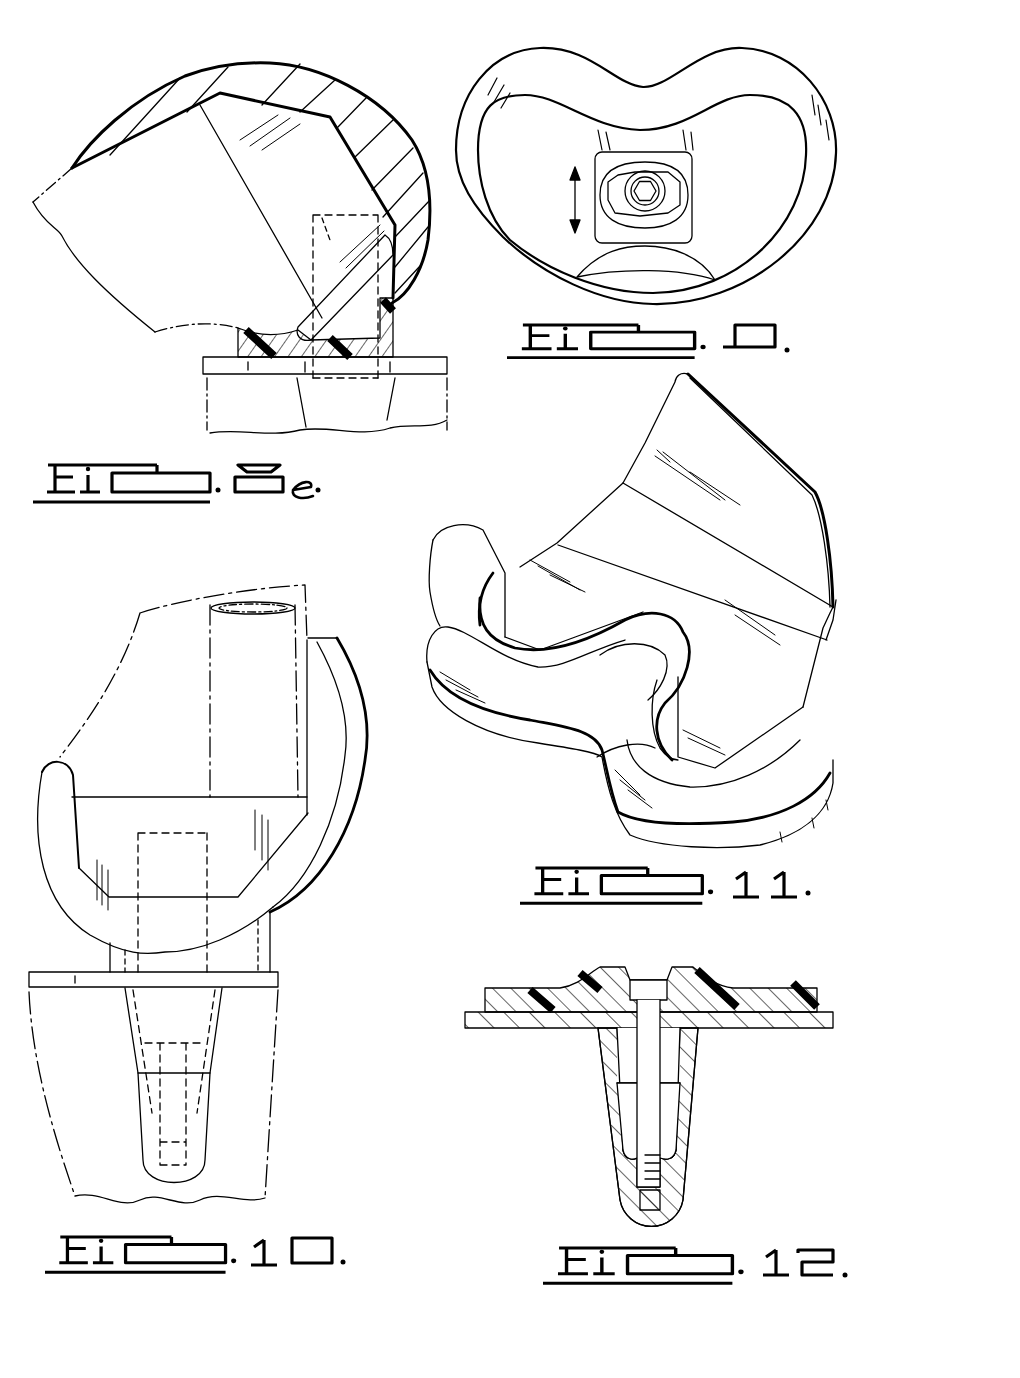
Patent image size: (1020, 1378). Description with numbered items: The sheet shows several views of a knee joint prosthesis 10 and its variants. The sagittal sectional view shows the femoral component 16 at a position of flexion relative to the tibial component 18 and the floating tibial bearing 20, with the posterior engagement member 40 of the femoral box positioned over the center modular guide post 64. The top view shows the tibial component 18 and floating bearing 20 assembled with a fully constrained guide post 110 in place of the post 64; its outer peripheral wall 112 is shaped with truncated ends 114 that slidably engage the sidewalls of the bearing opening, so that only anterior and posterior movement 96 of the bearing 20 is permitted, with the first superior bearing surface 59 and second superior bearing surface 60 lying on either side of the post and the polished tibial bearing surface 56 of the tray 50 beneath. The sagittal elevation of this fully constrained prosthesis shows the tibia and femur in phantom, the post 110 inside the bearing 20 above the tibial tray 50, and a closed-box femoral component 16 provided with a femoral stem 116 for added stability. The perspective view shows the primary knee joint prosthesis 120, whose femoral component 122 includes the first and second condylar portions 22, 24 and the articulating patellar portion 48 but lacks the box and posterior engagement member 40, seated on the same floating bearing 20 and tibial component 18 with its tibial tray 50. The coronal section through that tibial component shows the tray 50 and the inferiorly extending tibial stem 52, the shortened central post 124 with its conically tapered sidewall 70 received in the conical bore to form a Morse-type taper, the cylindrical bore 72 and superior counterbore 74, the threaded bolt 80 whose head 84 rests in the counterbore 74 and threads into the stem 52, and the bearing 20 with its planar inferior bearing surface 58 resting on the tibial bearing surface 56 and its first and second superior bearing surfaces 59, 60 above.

In FIG. 8E, the knee joint prosthesis 10 is at (251, 173).
In FIG. 10, the knee joint prosthesis 10 is at (358, 636).
In FIG. 8E, the femoral component 16 is at (322, 92).
In FIG. 10, the femoral component 16 is at (352, 770).
In FIG. 8E, the tibial component 18 is at (203, 367).
In FIG. 10, the tibial component 18 is at (278, 980).
In FIG. 12, the tibial component 18 is at (679, 1127).
In FIG. 8E, the floating tibial bearing 20 is at (388, 333).
In FIG. 9, the floating tibial bearing 20 is at (530, 117).
In FIG. 10, the floating tibial bearing 20 is at (267, 932).
In FIG. 11, the floating tibial bearing 20 is at (753, 780).
In FIG. 12, the floating tibial bearing 20 is at (787, 1000).
In FIG. 11, the first condylar portion 22 is at (597, 757).
In FIG. 11, the second condylar portion 24 is at (463, 557).
In FIG. 8E, the posterior engagement member 40 is at (302, 268).
In FIG. 10, the posterior engagement member 40 is at (135, 810).
In FIG. 11, the patellar portion 48 is at (773, 442).
In FIG. 9, the tibial tray 50 is at (813, 180).
In FIG. 11, the tibial tray 50 is at (633, 823).
In FIG. 12, the tibial tray 50 is at (480, 1023).
In FIG. 12, the tibial stem 52 is at (677, 1185).
In FIG. 9, the tibial bearing surface 56 is at (790, 83).
In FIG. 12, the tibial bearing surface 56 is at (472, 1010).
In FIG. 12, the inferior bearing surface 58 is at (510, 1020).
In FIG. 9, the first superior bearing surface 59 is at (500, 178).
In FIG. 12, the first superior bearing surface 59 is at (500, 988).
In FIG. 9, the second superior bearing surface 60 is at (765, 207).
In FIG. 12, the second superior bearing surface 60 is at (757, 1000).
In FIG. 8E, the center modular guide post 64 is at (333, 208).
In FIG. 12, the conically tapered sidewall 70 is at (680, 1062).
In FIG. 12, the cylindrical bore 72 is at (630, 1123).
In FIG. 12, the counterbore 74 is at (655, 980).
In FIG. 12, the threaded bolt 80 is at (653, 1123).
In FIG. 12, the head 84 is at (638, 985).
In FIG. 9, the anterior and posterior movement 96 is at (572, 197).
In FIG. 9, the fully constrained guide post 110 is at (612, 180).
In FIG. 10, the fully constrained guide post 110 is at (187, 857).
In FIG. 9, the outer peripheral wall 112 is at (650, 157).
In FIG. 9, the truncated ends 114 is at (705, 193).
In FIG. 10, the femoral stem 116 is at (210, 677).
In FIG. 11, the primary knee joint prosthesis 120 is at (679, 570).
In FIG. 11, the femoral component 122 is at (833, 540).
In FIG. 12, the central post 124 is at (690, 973).